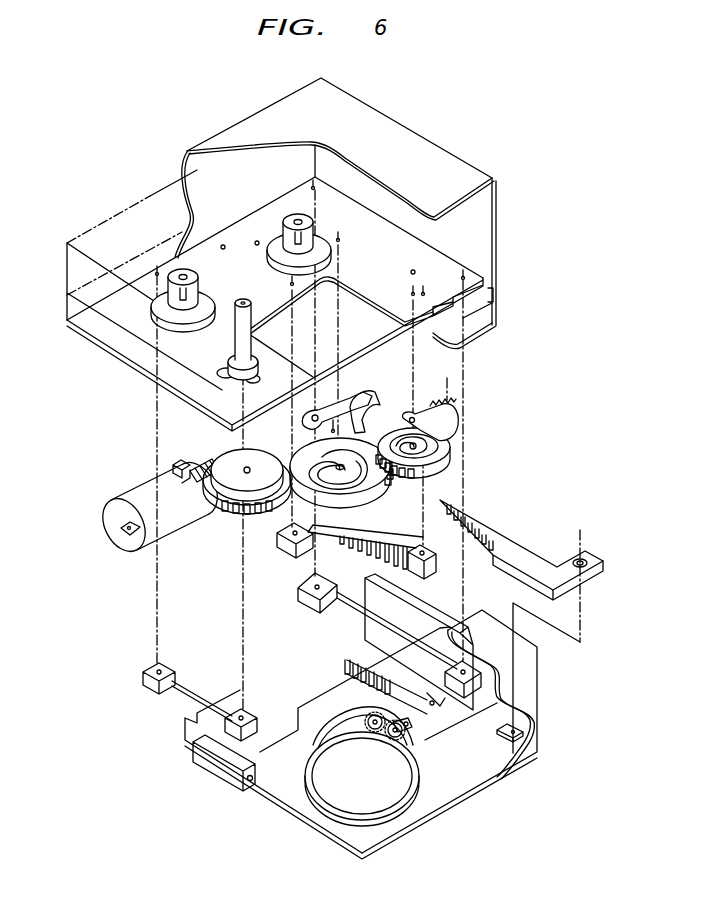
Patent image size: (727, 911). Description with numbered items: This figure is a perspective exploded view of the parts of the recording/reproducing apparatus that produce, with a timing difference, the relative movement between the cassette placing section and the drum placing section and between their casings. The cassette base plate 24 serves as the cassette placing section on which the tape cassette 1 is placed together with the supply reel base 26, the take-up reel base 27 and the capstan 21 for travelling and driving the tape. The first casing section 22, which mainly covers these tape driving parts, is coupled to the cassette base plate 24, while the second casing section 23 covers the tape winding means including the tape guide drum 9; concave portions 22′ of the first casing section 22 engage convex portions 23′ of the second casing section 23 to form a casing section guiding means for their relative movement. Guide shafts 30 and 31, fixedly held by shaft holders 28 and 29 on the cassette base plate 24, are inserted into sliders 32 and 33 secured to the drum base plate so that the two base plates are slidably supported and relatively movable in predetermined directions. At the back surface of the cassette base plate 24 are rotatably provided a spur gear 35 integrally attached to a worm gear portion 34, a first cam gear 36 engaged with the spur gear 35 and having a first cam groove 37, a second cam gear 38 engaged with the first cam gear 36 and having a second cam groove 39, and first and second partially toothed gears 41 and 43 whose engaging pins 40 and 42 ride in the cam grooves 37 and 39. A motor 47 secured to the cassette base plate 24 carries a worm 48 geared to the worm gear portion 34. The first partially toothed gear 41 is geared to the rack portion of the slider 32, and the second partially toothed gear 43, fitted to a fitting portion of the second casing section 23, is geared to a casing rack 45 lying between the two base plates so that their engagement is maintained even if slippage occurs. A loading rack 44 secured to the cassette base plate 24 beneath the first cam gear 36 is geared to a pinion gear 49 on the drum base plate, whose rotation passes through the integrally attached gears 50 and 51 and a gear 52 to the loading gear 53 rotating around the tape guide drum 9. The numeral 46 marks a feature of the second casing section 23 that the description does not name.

The tape cassette 1 is at (153, 192).
The tape guide drum 9 is at (428, 720).
The capstan 21 is at (233, 337).
The first casing section 22 is at (402, 117).
The concave portions 22′ is at (495, 290).
The second casing section 23 is at (535, 745).
The convex portions 23′ is at (500, 688).
The cassette base plate 24 is at (440, 262).
The supply reel base 26 is at (302, 222).
The take-up reel base 27 is at (200, 290).
The shaft holder 28 is at (297, 590).
The shaft holder 29 is at (143, 678).
The guide shaft 30 is at (340, 610).
The guide shaft 31 is at (202, 693).
The slider 32 is at (345, 668).
The slider 33 is at (230, 782).
The worm gear portion 34 is at (236, 514).
The spur gear 35 is at (232, 453).
The first cam gear 36 is at (305, 452).
The first cam groove 37 is at (285, 522).
The second cam gear 38 is at (450, 466).
The second cam groove 39 is at (450, 455).
The engaging pin 40 is at (353, 410).
The first partially toothed gear 41 is at (355, 393).
The engaging pin 42 is at (457, 422).
The second partially toothed gear 43 is at (447, 395).
The loading rack 44 is at (365, 528).
The casing rack 45 is at (485, 520).
The cutout 46 is at (530, 715).
The motor 47 is at (100, 519).
The worm 48 is at (200, 490).
The pinion gear 49 is at (420, 740).
The gear 50 is at (410, 745).
The gear 51 is at (380, 748).
The gear 52 is at (365, 723).
The loading gear 53 is at (313, 743).